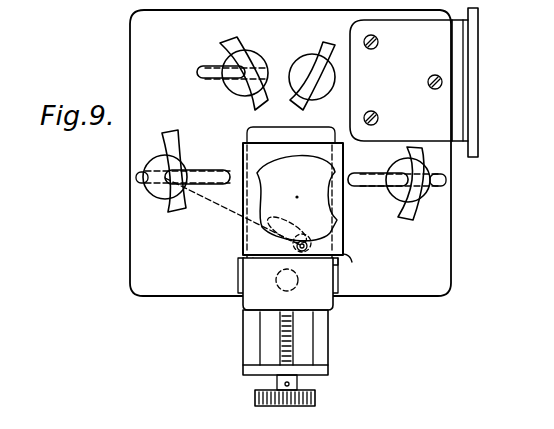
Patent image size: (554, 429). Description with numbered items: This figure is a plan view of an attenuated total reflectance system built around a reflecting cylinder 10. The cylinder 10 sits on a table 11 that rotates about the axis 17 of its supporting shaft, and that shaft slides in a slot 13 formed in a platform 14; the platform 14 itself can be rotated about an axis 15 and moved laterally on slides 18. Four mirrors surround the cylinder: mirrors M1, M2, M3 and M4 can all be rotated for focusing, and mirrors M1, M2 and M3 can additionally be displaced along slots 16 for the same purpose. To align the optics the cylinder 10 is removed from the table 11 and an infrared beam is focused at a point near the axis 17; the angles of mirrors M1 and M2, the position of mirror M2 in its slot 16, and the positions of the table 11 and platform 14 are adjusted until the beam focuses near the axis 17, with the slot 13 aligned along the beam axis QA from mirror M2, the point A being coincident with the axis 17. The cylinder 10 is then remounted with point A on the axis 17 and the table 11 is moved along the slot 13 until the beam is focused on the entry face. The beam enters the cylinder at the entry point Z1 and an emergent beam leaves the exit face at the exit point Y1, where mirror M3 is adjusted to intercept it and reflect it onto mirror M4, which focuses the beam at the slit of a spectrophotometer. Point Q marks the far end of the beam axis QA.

The reflecting cylinder 10 is at (283, 164).
The table 11 is at (343, 250).
The slot 13 is at (297, 198).
The platform 14 is at (322, 304).
The axis 15 is at (283, 281).
The slots 16 is at (203, 72).
The axis 17 is at (343, 254).
The slides 18 is at (320, 344).
The point A is at (302, 256).
The point Q is at (165, 177).
The mirror M1 is at (236, 63).
The mirror M2 is at (183, 183).
The mirror M3 is at (403, 194).
The mirror M4 is at (314, 65).
The exit point Y' Y1 is at (336, 213).
The entry point Z' Z1 is at (237, 213).